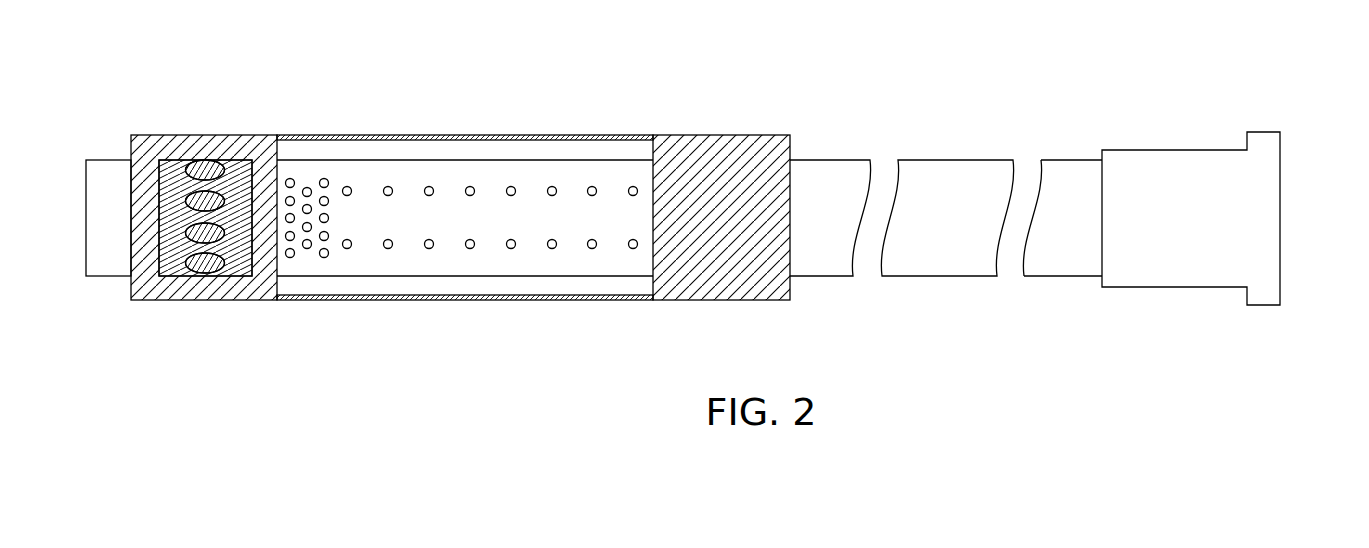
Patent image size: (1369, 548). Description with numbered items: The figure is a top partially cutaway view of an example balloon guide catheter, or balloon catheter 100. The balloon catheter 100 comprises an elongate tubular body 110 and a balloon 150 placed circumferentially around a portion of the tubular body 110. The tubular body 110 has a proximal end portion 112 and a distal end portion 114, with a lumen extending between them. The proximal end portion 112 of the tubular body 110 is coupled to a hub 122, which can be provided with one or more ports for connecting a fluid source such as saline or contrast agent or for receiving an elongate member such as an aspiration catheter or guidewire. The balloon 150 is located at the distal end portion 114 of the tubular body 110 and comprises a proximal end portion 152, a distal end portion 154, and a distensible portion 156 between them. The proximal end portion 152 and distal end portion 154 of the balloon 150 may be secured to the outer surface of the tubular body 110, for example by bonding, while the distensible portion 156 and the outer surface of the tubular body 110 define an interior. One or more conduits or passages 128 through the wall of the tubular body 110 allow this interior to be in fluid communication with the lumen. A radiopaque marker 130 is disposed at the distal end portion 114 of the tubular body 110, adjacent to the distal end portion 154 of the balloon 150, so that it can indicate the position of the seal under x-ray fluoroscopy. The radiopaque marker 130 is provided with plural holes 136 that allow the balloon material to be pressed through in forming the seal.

The balloon catheter 100 is at (830, 96).
The tubular body 110 is at (926, 288).
The proximal end portion 112 is at (1057, 277).
The distal end portion 114 is at (823, 277).
The hub 122 is at (1180, 300).
The passages 128 is at (391, 195).
The radiopaque marker 130 is at (228, 159).
The holes 136 is at (203, 277).
The balloon 150 is at (506, 126).
The proximal end portion 152 is at (705, 134).
The distal end portion 154 is at (159, 134).
The distensible portion 156 is at (453, 134).